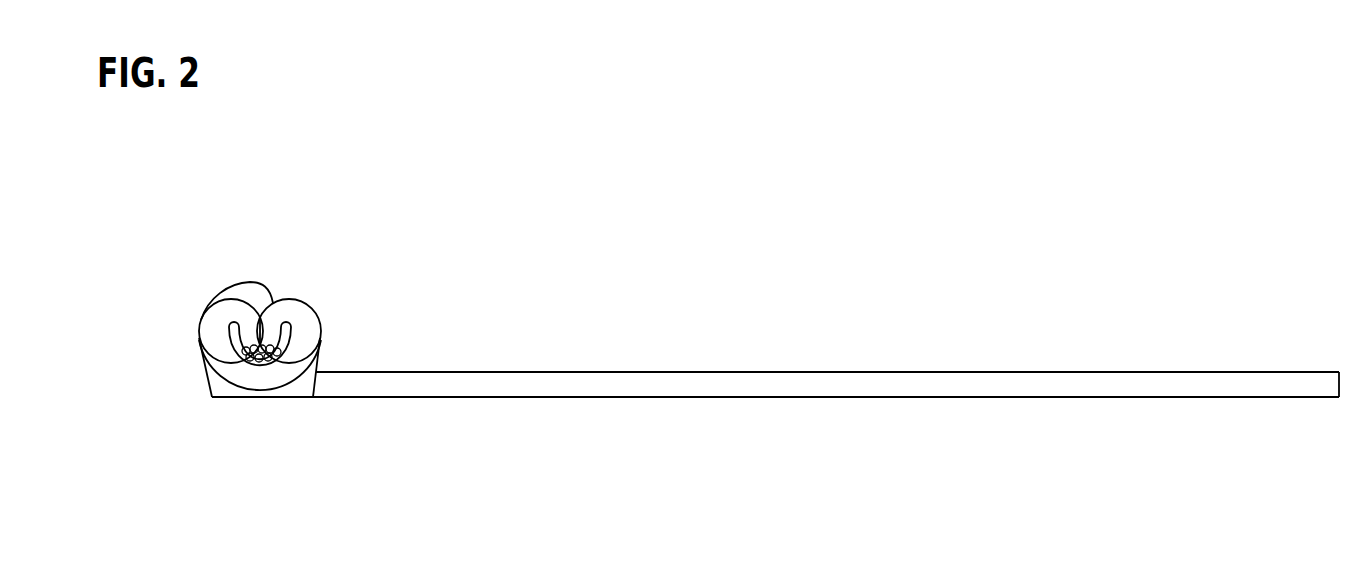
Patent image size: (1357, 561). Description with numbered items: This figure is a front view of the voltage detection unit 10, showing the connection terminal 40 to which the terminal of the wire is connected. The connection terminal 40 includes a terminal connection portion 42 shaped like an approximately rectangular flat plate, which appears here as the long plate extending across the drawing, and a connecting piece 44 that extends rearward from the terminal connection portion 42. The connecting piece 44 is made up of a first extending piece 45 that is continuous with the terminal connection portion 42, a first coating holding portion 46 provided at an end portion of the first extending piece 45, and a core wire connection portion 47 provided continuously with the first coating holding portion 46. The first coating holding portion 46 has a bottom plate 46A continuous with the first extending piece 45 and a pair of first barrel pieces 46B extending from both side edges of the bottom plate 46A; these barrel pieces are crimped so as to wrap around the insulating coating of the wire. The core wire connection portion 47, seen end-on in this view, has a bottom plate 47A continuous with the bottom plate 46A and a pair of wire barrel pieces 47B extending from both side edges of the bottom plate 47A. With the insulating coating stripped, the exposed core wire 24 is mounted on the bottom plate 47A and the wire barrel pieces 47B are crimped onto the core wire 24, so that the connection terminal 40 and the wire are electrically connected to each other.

The voltage detection unit 10 is at (766, 277).
The core wire 24 is at (258, 350).
The connection terminal 40 is at (1039, 335).
The terminal connection portion 42 is at (1039, 385).
The connecting piece 44 is at (367, 350).
The first extending piece 45 is at (369, 391).
The first coating holding portion 46 is at (193, 375).
The bottom plate 46A is at (282, 393).
The first barrel pieces 46B is at (222, 296).
The core wire connection portion 47 is at (311, 286).
The bottom plate 47A is at (267, 380).
The wire barrel pieces 47B is at (293, 307).